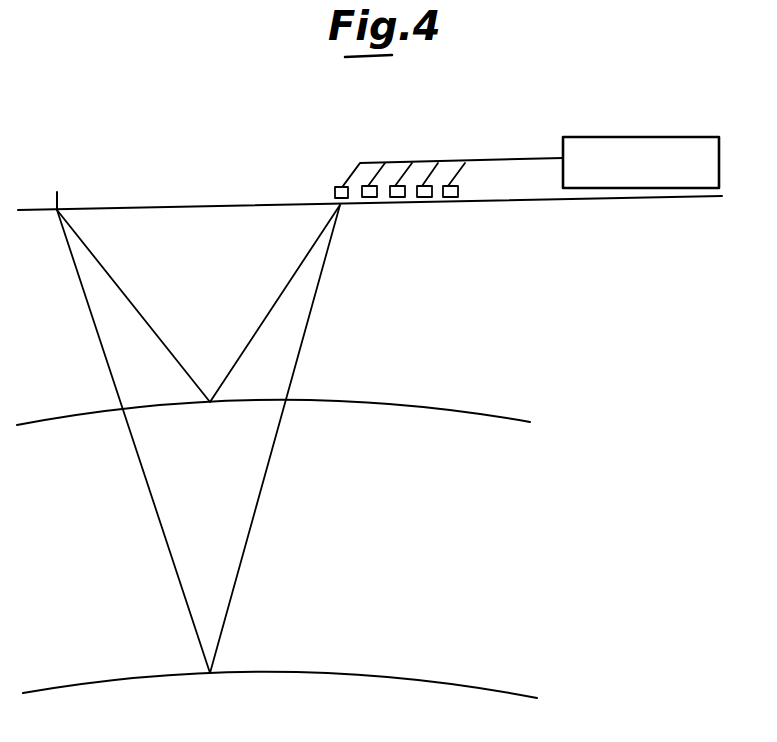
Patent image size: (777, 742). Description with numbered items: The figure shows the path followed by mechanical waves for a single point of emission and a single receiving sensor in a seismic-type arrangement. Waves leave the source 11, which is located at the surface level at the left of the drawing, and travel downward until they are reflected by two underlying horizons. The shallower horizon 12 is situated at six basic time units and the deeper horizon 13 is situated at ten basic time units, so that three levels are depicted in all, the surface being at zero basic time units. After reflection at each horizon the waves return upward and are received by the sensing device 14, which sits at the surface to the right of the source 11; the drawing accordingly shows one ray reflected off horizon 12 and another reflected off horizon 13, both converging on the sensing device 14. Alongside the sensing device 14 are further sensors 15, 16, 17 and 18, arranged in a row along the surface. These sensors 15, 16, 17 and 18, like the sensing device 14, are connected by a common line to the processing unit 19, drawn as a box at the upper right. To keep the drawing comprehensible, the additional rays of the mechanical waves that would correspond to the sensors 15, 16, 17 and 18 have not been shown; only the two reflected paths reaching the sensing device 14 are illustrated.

The point of emission 11 is at (58, 195).
The horizon 12 is at (358, 403).
The horizon 13 is at (305, 672).
The sensing device 14 is at (333, 189).
The sensor 15 is at (368, 184).
The sensor 16 is at (396, 184).
The sensor 17 is at (423, 184).
The sensor 18 is at (448, 184).
The processing unit 19 is at (634, 137).